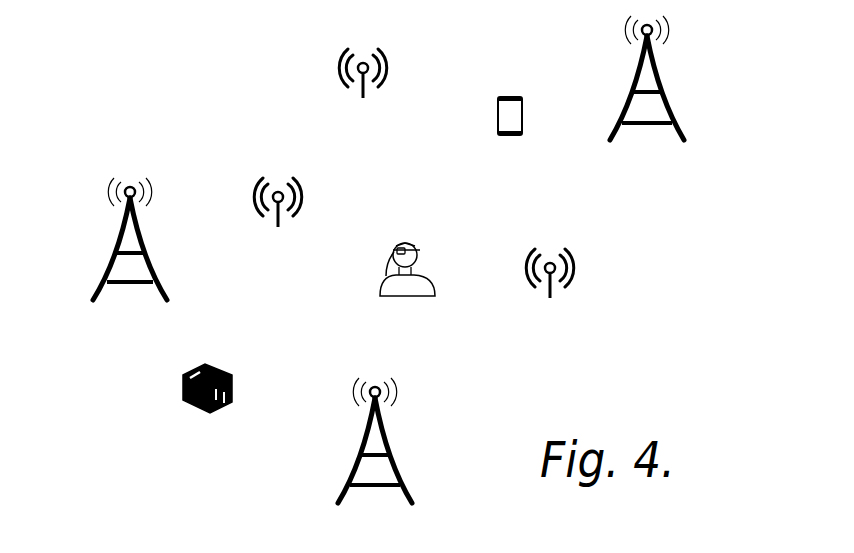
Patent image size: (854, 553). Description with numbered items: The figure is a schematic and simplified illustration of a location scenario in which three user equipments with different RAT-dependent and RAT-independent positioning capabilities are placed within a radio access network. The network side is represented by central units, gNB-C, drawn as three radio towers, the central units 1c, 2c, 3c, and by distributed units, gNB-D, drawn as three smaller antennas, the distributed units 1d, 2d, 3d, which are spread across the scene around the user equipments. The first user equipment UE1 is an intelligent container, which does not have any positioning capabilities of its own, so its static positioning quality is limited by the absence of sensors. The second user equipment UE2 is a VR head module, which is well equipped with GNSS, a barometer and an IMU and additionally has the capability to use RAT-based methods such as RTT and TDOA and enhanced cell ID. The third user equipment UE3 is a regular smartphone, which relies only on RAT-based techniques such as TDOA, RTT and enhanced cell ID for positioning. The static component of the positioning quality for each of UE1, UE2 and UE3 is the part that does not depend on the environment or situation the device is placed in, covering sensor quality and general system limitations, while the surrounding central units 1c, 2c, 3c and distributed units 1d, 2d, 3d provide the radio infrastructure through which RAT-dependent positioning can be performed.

The central unit 1c is at (364, 466).
The central unit 2c is at (120, 273).
The central unit 3c is at (652, 108).
The distributed unit 1d is at (560, 266).
The distributed unit 2d is at (252, 197).
The distributed unit 3d is at (338, 62).
The intelligent container UE1 is at (184, 408).
The VR head module UE2 is at (410, 243).
The regular smartphone UE3 is at (510, 117).